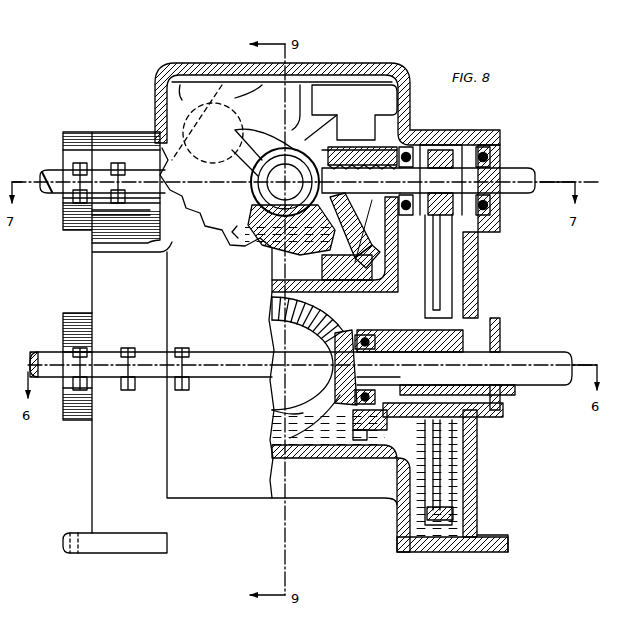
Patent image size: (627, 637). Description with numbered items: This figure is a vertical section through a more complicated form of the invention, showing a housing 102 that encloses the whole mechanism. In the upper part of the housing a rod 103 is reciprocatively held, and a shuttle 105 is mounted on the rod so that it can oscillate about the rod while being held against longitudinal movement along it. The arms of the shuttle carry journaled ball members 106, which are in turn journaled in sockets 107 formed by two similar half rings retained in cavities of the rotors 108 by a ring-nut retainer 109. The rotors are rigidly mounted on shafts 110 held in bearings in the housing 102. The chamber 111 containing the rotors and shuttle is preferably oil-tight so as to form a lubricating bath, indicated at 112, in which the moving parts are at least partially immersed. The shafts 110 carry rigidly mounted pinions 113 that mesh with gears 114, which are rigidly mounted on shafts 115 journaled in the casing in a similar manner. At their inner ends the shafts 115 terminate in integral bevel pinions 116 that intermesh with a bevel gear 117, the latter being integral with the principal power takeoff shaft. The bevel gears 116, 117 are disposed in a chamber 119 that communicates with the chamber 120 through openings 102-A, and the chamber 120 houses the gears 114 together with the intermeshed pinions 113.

The housing 102 is at (371, 63).
The openings 102-A is at (356, 437).
The rod 103 is at (292, 170).
The shuttle 105 is at (236, 237).
The ball members 106 is at (240, 131).
The sockets 107 is at (350, 212).
The rotors 108 is at (322, 105).
The ring-nut retainer 109 is at (360, 250).
The shafts 110 is at (58, 174).
The chamber 111 is at (282, 107).
The lubricating bath 112 is at (238, 232).
The pinions 113 is at (440, 160).
The gears 114 is at (440, 290).
The shafts 115 is at (46, 352).
The bevel pinions 116 is at (338, 364).
The bevel gear 117 is at (287, 405).
The chamber 119 is at (353, 438).
The chamber 120 is at (479, 491).